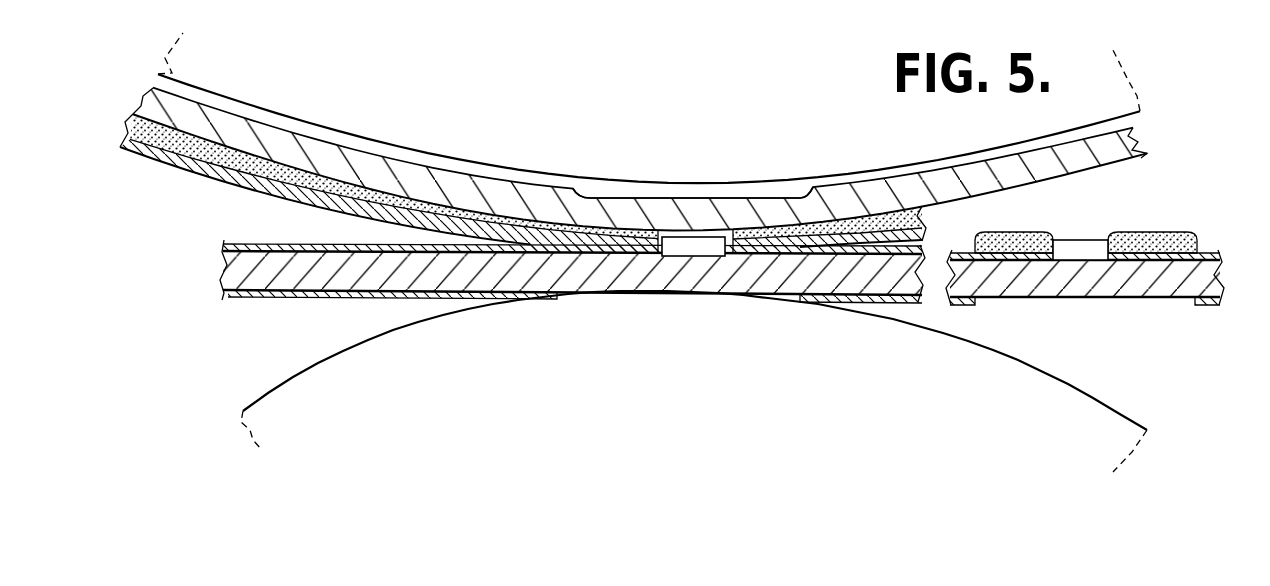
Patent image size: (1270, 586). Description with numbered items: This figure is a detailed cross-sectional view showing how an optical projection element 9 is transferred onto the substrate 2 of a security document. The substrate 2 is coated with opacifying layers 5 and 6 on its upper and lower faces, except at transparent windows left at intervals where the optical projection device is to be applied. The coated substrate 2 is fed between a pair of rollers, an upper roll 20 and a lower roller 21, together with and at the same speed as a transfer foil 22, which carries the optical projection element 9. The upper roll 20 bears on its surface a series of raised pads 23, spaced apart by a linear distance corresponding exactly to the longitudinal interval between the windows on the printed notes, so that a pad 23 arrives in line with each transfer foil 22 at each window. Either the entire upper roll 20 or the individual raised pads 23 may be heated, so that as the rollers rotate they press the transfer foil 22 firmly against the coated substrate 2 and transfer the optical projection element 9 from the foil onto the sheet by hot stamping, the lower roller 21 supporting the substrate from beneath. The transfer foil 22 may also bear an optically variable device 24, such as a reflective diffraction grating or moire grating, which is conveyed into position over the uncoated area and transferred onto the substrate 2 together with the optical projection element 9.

The upper roll 20 is at (430, 103).
The roller 21 is at (492, 400).
The transfer foil 22 is at (206, 181).
The raised pad 23 is at (612, 196).
The optically variable device 24 is at (806, 240).
The opacifying layer 5 is at (224, 249).
The substrate 2 is at (243, 272).
The opacifying layer 6 is at (240, 298).
The optical projection element 9 is at (693, 247).